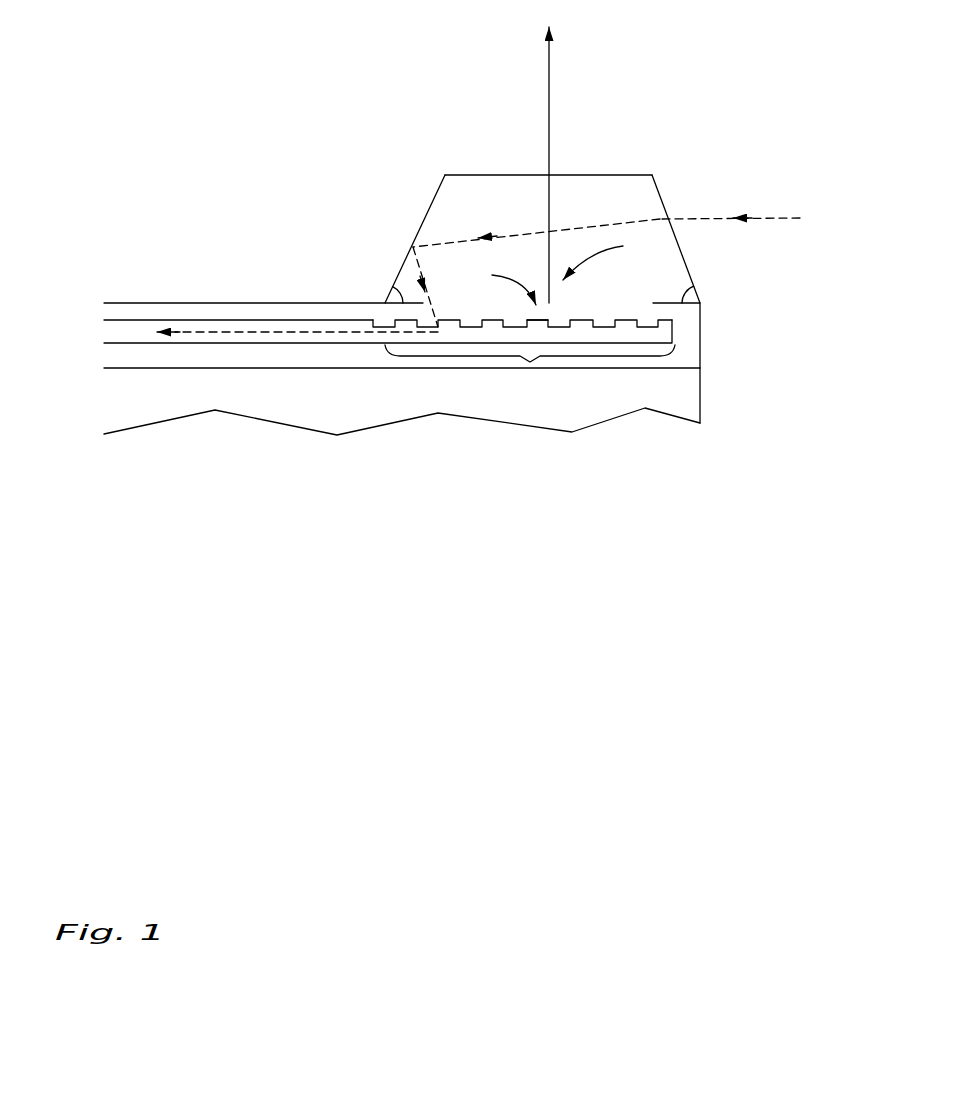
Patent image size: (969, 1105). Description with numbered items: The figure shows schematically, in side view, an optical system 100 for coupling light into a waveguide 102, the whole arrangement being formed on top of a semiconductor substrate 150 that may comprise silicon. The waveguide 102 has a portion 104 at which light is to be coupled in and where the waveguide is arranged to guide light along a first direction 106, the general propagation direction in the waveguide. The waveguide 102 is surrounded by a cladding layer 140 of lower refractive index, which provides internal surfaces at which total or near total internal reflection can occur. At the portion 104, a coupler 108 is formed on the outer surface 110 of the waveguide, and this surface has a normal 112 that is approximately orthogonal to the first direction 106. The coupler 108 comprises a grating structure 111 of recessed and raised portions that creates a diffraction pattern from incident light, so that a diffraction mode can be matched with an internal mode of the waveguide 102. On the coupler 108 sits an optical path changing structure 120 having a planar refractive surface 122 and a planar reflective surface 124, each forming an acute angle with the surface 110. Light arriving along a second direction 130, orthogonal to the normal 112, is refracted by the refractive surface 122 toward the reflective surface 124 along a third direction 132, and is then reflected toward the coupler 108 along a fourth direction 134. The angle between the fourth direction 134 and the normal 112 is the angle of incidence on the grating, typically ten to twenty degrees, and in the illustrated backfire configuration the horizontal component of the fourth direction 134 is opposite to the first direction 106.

The optical system 100 is at (157, 122).
The waveguide 102 is at (129, 330).
The portion 104 is at (524, 356).
The first direction 106 is at (255, 330).
The coupler 108 is at (616, 255).
The surface 110 is at (494, 282).
The grating structure 111 is at (563, 320).
The normal 112 is at (549, 107).
The optical path changing structure 120 is at (572, 205).
The refractive surface 122 is at (660, 193).
The reflective surface 124 is at (427, 215).
The second direction 130 is at (757, 220).
The third direction 132 is at (642, 220).
The fourth direction 134 is at (423, 303).
The cladding layer 140 is at (692, 312).
The semiconductor substrate 150 is at (692, 408).